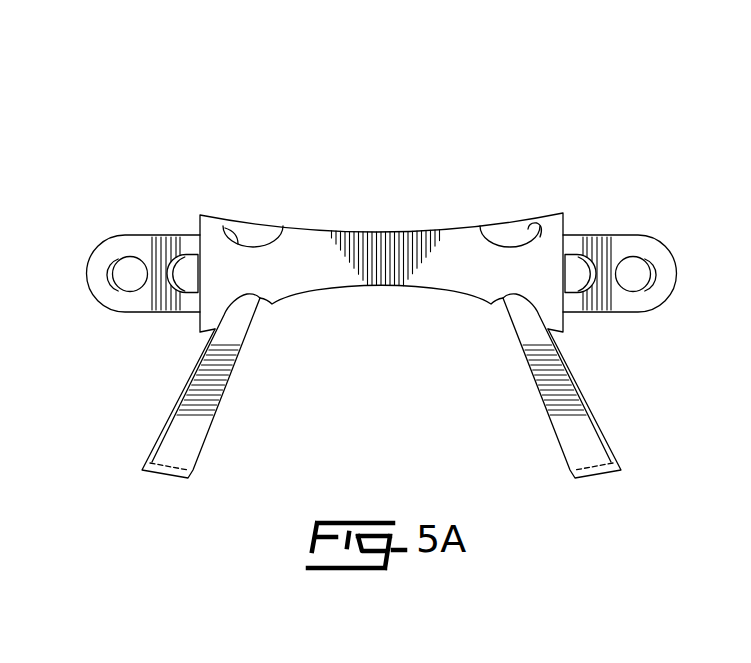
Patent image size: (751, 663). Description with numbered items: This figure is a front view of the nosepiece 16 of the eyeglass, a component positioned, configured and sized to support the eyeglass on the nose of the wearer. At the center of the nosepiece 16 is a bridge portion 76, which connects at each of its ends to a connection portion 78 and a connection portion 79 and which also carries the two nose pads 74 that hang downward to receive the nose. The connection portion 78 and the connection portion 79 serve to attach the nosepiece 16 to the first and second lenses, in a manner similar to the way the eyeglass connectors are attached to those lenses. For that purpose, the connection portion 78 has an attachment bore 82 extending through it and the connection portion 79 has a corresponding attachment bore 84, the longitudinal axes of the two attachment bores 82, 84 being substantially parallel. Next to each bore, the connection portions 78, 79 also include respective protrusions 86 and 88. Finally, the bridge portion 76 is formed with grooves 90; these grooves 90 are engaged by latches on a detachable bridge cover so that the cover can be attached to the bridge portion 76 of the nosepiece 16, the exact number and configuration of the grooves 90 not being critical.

The nosepiece 16 is at (453, 136).
The nose pads 74 is at (220, 402).
The bridge portion 76 is at (378, 231).
The connection portion 78 is at (127, 235).
The connection portion 79 is at (620, 235).
The attachment bore 82 is at (120, 282).
The attachment bore 84 is at (643, 288).
The protrusion 86 is at (180, 282).
The protrusion 88 is at (583, 284).
The grooves 90 is at (257, 228).